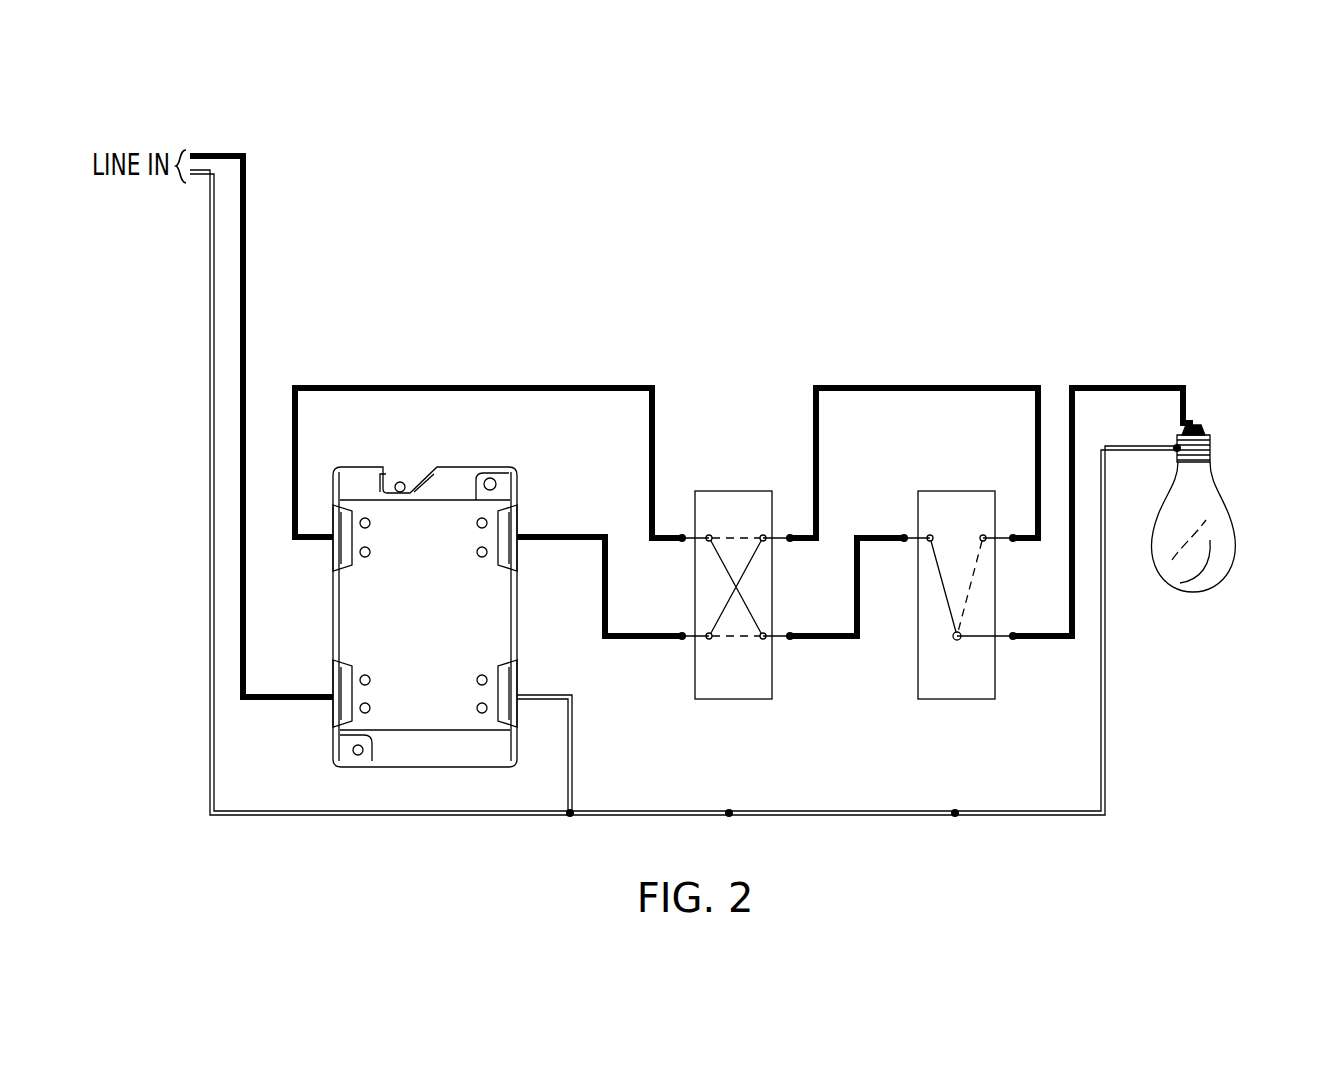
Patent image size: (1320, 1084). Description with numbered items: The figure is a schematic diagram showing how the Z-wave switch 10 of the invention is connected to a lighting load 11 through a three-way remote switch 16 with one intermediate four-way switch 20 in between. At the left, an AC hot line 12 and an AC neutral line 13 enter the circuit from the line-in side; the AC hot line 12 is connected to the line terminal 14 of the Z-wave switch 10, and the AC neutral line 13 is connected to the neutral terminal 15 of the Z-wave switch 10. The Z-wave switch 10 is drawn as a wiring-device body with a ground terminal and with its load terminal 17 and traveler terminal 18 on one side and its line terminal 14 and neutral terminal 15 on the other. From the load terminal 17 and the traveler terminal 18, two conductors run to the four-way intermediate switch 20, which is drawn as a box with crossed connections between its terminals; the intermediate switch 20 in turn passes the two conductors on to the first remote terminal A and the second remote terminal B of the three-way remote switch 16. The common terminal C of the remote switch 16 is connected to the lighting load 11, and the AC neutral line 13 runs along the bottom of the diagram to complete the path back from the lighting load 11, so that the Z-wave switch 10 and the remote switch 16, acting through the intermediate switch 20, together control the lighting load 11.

The Z-wave switch 10 is at (441, 589).
The lighting load 11 is at (1222, 491).
The AC hot line 12 is at (272, 263).
The AC neutral line 13 is at (207, 265).
The line terminal 14 is at (333, 705).
The neutral terminal 15 is at (512, 698).
The three-way remote switch 16 is at (976, 705).
The load terminal 17 is at (333, 548).
The traveler terminal 18 is at (521, 542).
The four-way intermediate switch 20 is at (754, 705).